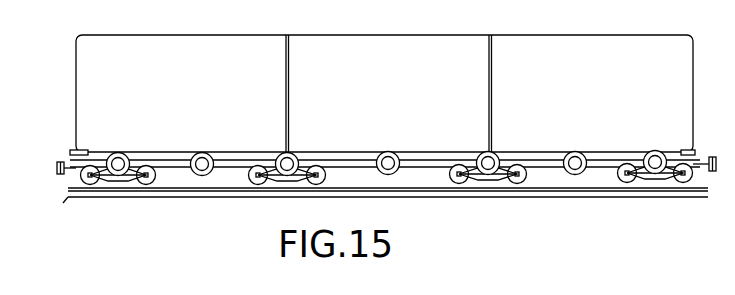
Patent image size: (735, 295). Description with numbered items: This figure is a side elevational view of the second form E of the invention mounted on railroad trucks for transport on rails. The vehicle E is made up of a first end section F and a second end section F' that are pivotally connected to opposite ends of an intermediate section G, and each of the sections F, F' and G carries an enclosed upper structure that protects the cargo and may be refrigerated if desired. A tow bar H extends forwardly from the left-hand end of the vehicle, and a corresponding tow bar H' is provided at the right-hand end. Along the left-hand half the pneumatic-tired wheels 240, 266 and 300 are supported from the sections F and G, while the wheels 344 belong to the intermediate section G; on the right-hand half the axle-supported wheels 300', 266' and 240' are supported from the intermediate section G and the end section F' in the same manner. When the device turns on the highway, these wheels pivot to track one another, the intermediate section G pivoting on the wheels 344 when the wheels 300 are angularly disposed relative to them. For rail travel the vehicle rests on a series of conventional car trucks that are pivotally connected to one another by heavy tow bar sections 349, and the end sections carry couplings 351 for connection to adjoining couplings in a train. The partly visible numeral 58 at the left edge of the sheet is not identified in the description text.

The second form of the invention E is at (384, 80).
The tow bar H is at (66, 138).
The tow bar H' is at (698, 134).
The partial numeral (cut off) 58 is at (8, 132).
The coupling 351 is at (57, 170).
The pneumatic-tired wheels 240 is at (118, 188).
The pneumatic-tired wheels 266 is at (217, 188).
The pneumatic-tired wheels 300 is at (287, 188).
The pneumatic-tired wheels 344 is at (389, 177).
The pneumatic-tired wheels 300' is at (488, 188).
The pneumatic-tired wheels 266' is at (560, 188).
The pneumatic-tired wheels 240' is at (655, 188).
The first end section F is at (167, 187).
The intermediate section G is at (430, 186).
The second end section F' is at (598, 185).
The tow bar sections 349 is at (218, 168).